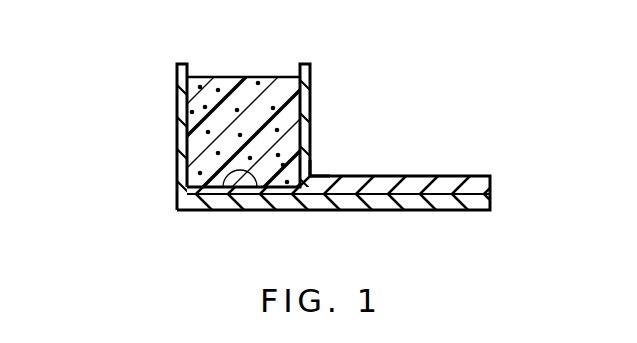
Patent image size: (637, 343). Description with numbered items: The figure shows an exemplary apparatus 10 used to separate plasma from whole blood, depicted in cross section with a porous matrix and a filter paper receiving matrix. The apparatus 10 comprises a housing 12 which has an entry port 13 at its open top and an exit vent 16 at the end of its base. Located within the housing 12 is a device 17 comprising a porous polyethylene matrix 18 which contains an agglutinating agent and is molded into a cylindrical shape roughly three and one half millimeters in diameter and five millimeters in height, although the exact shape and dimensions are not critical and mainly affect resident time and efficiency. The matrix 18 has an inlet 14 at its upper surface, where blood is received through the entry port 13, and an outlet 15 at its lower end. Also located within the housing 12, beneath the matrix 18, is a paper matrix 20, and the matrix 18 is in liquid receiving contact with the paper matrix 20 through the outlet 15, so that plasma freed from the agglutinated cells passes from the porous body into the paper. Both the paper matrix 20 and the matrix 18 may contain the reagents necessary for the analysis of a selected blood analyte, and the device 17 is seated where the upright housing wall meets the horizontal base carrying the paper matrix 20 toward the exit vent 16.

The apparatus 10 is at (170, 118).
The housing 12 is at (178, 163).
The entry port 13 is at (215, 62).
The inlet 14 is at (262, 77).
The outlet 15 is at (208, 195).
The exit vent 16 is at (490, 193).
The device 17 is at (320, 161).
The porous polyethylene matrix 18 is at (285, 117).
The paper matrix 20 is at (401, 194).